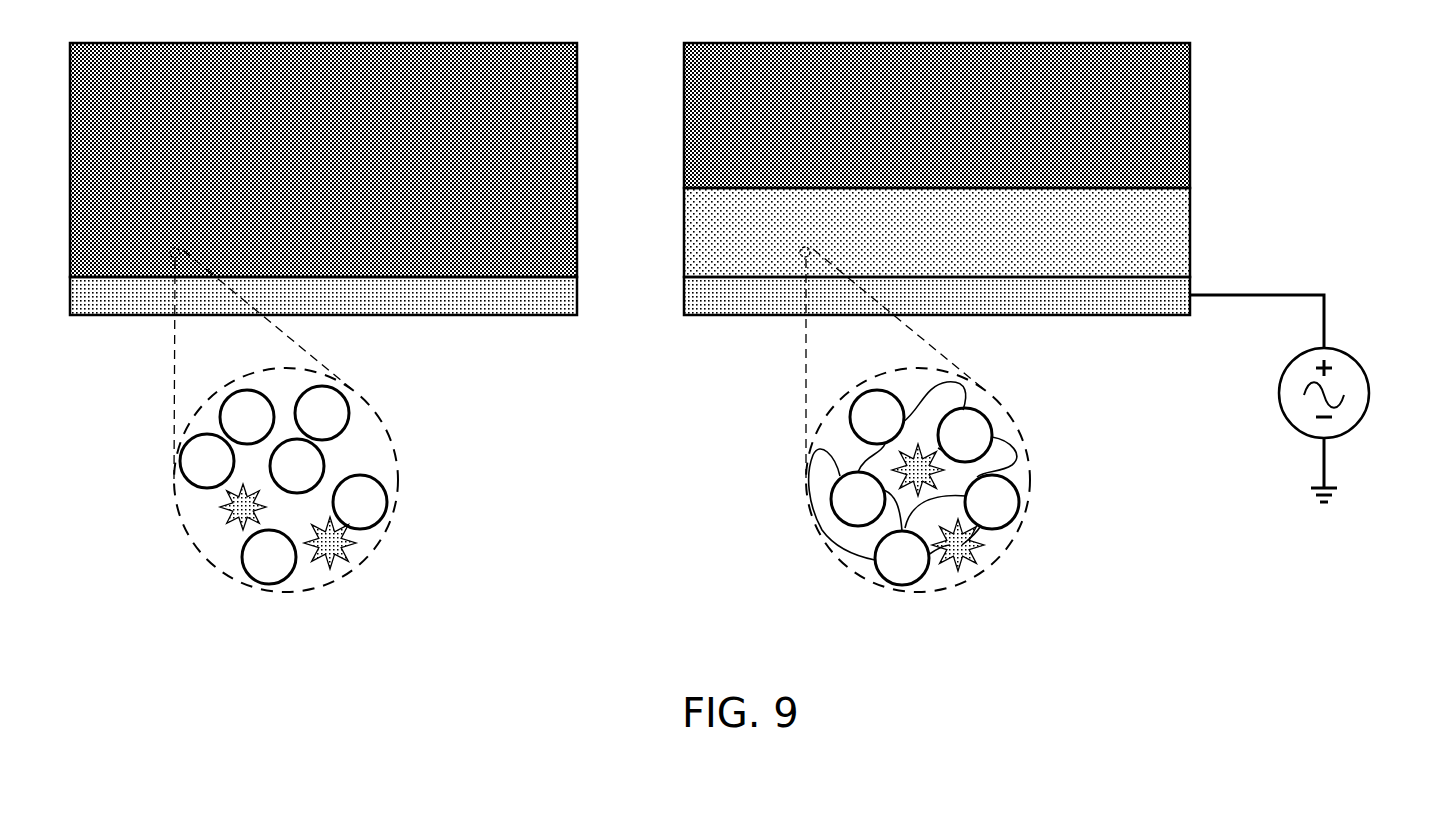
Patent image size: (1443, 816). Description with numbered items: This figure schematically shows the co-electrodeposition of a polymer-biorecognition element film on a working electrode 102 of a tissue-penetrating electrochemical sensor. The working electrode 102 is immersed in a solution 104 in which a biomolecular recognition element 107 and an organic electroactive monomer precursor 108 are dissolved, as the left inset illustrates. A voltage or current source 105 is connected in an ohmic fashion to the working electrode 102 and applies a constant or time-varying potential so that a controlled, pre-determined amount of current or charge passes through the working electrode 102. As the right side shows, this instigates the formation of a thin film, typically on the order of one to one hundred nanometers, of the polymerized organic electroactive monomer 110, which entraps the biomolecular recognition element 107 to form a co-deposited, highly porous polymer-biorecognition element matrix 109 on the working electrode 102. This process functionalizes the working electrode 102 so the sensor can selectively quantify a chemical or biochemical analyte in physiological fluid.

The working electrode 102 is at (572, 300).
The solution 104 is at (577, 78).
The voltage or current source 105 is at (1366, 372).
The biomolecular recognition element 107 is at (337, 556).
The organic electroactive monomer precursor 108 is at (348, 416).
The polymer-biorecognition element matrix 109 is at (1180, 208).
The polymerized organic electroactive monomer 110 is at (986, 420).